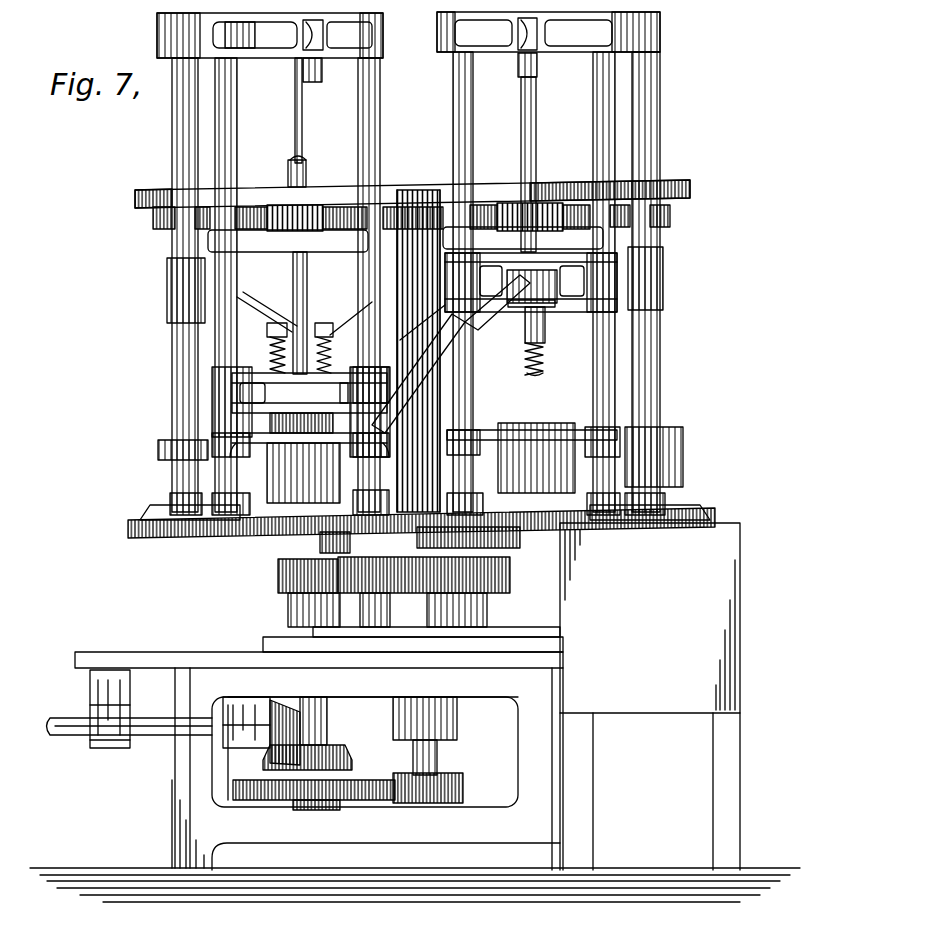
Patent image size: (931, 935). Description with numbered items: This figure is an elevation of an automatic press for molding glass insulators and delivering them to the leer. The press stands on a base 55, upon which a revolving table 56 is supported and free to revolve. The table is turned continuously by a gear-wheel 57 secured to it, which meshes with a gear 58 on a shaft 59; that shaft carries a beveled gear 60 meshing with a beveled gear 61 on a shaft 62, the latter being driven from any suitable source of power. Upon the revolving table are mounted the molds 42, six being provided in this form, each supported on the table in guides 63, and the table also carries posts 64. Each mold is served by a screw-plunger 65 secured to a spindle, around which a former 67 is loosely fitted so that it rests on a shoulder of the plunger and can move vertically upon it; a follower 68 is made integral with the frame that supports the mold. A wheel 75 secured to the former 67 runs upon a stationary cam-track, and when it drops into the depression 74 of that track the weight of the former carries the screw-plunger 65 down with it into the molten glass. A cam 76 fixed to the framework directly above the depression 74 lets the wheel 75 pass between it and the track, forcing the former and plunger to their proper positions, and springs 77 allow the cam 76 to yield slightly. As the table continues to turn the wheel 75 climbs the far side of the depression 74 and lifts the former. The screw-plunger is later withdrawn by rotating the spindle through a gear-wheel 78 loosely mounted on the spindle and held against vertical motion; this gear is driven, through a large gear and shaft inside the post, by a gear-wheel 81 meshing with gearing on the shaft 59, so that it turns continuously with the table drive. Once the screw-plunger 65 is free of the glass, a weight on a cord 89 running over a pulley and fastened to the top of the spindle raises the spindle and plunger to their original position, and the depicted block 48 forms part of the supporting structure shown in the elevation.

The mold 42 is at (160, 470).
The frame block 48 is at (650, 696).
The base 55 is at (140, 652).
The revolving table 56 is at (243, 528).
The gear-wheel 57 is at (510, 577).
The gear 58 is at (278, 582).
The shaft 59 is at (327, 712).
The beveled gear 60 is at (345, 755).
The beveled gear 61 is at (250, 750).
The shaft 62 is at (140, 738).
The guides 63 is at (296, 518).
The posts 64 is at (180, 378).
The screw-plunger 65 is at (545, 368).
The former 67 is at (548, 335).
The follower 68 is at (510, 425).
The depression 74 is at (275, 342).
The wheel 75 is at (300, 395).
The cam 76 is at (305, 322).
The springs 77 is at (290, 327).
The gear-wheel 78 is at (540, 200).
The gear-wheel 81 is at (463, 786).
The cord 89 is at (305, 110).